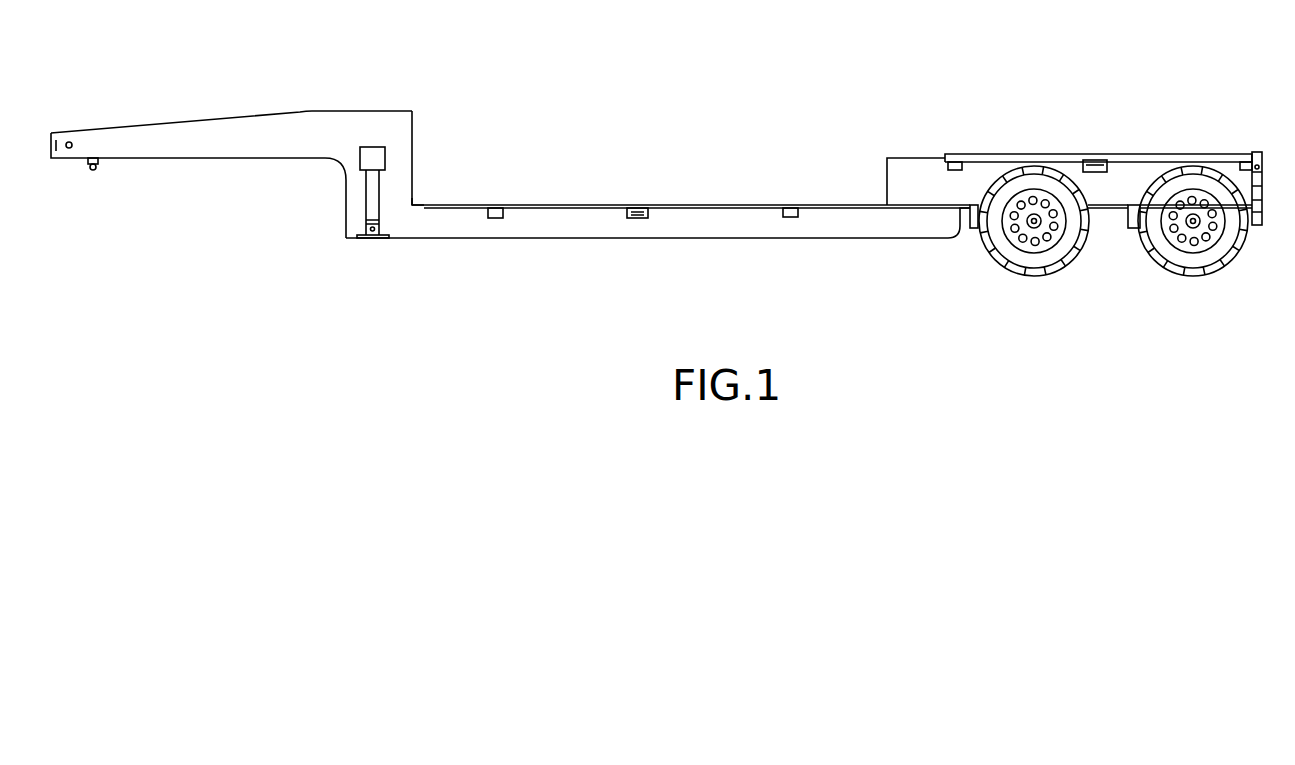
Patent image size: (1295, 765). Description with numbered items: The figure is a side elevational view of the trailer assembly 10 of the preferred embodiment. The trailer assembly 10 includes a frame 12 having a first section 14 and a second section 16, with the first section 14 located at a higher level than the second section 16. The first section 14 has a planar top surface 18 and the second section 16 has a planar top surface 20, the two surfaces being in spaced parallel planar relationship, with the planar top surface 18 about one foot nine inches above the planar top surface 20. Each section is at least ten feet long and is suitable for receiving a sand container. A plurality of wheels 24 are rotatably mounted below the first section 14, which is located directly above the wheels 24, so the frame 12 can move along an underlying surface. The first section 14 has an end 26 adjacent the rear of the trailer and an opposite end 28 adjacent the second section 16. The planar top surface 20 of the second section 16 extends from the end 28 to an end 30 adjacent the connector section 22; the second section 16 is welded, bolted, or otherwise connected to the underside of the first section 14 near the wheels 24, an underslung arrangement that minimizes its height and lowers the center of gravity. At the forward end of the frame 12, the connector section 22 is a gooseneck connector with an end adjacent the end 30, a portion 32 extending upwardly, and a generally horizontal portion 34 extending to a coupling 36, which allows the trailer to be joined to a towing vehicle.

The trailer assembly 10 is at (866, 86).
The frame 12 is at (381, 111).
The first section 14 is at (1085, 160).
The second section 16 is at (582, 205).
The planar top surface 18 is at (920, 158).
The planar top surface 20 is at (718, 205).
The connector section 22 is at (290, 127).
The wheels 24 is at (1068, 270).
The end 26 is at (1258, 152).
The opposite end 28 is at (887, 165).
The end 30 is at (412, 203).
The portion 32 is at (400, 147).
The generally horizontal portion 34 is at (172, 130).
The coupling 36 is at (96, 168).